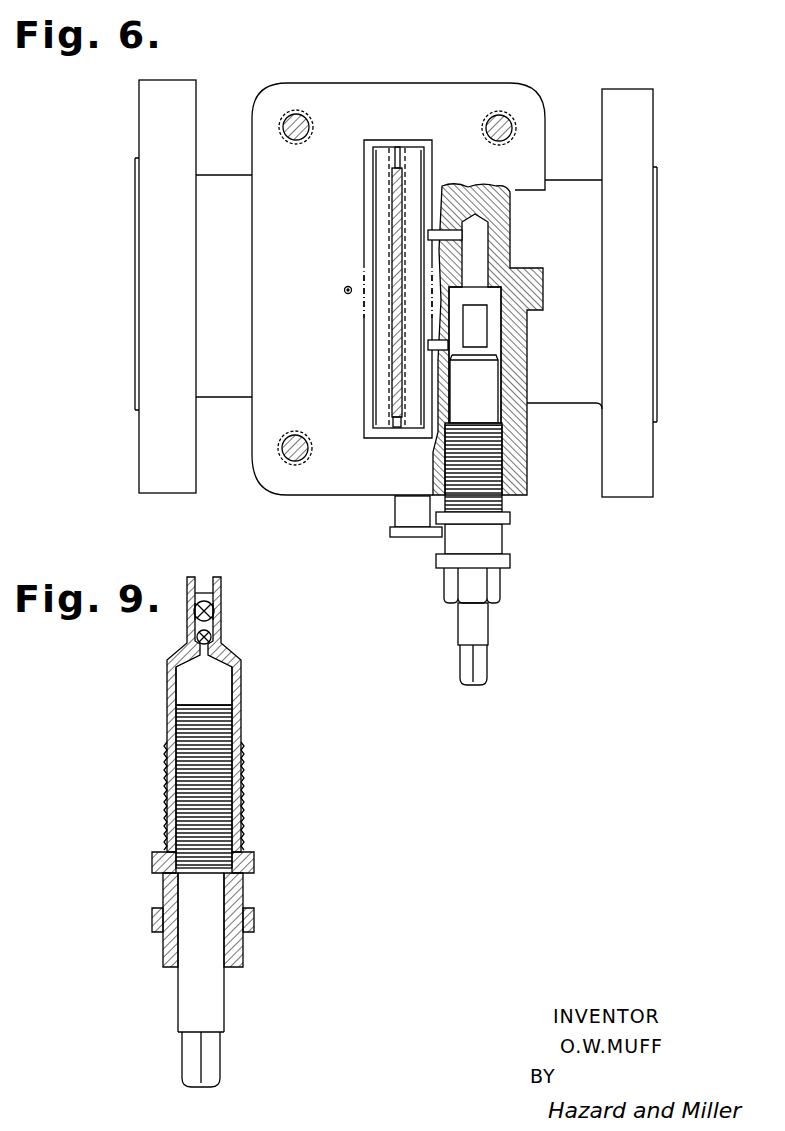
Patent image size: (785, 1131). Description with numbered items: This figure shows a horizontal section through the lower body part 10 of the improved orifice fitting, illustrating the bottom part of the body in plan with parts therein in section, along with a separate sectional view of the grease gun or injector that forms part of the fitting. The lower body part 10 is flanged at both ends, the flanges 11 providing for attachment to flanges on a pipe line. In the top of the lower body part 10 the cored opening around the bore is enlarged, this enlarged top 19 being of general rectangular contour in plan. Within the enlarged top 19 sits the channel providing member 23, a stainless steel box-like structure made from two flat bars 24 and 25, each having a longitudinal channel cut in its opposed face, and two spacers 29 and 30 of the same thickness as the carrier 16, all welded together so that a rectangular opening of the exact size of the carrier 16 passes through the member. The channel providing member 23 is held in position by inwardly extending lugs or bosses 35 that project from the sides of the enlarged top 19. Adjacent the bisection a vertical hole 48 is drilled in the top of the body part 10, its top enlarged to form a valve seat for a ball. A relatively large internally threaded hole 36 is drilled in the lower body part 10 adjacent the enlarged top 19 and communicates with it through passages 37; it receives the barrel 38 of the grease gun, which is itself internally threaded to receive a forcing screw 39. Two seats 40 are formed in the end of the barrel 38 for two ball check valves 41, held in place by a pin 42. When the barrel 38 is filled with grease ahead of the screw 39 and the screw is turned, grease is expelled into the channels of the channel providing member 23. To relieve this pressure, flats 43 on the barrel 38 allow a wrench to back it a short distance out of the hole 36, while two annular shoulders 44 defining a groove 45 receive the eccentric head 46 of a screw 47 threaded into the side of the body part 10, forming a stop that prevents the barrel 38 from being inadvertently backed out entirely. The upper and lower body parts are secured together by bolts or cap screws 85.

In FIG. 6, the lower body part 10 is at (199, 335).
In FIG. 6, the flange 11 is at (160, 445).
In FIG. 6, the carrier 16 is at (384, 225).
In FIG. 6, the enlarged top of opening 19 is at (368, 411).
In FIG. 6, the channel providing member 23 is at (380, 176).
In FIG. 6, the flat bar 24 is at (383, 199).
In FIG. 6, the flat bar 25 is at (410, 179).
In FIG. 6, the spacer 29 is at (396, 422).
In FIG. 6, the spacer 30 is at (399, 150).
In FIG. 6, the lugs or bosses 35 is at (423, 297).
In FIG. 6, the hole 36 is at (498, 328).
In FIG. 6, the passage 37 is at (455, 237).
In FIG. 6, the barrel 38 is at (490, 463).
In FIG. 9, the barrel 38 is at (159, 800).
In FIG. 9, the forcing screw 39 is at (228, 836).
In FIG. 9, the seat 40 is at (214, 636).
In FIG. 9, the ball check valve 41 is at (196, 638).
In FIG. 9, the pin 42 is at (207, 594).
In FIG. 6, the flats 43 is at (495, 590).
In FIG. 6, the annular shoulder 44 is at (495, 560).
In FIG. 9, the annular shoulder 44 is at (250, 912).
In FIG. 6, the groove 45 is at (458, 533).
In FIG. 9, the groove 45 is at (165, 880).
In FIG. 6, the eccentric head 46 is at (412, 532).
In FIG. 6, the screw 47 is at (398, 508).
In FIG. 6, the vertical hole 48 is at (344, 295).
In FIG. 6, the bolts or cap screws 85 is at (299, 111).